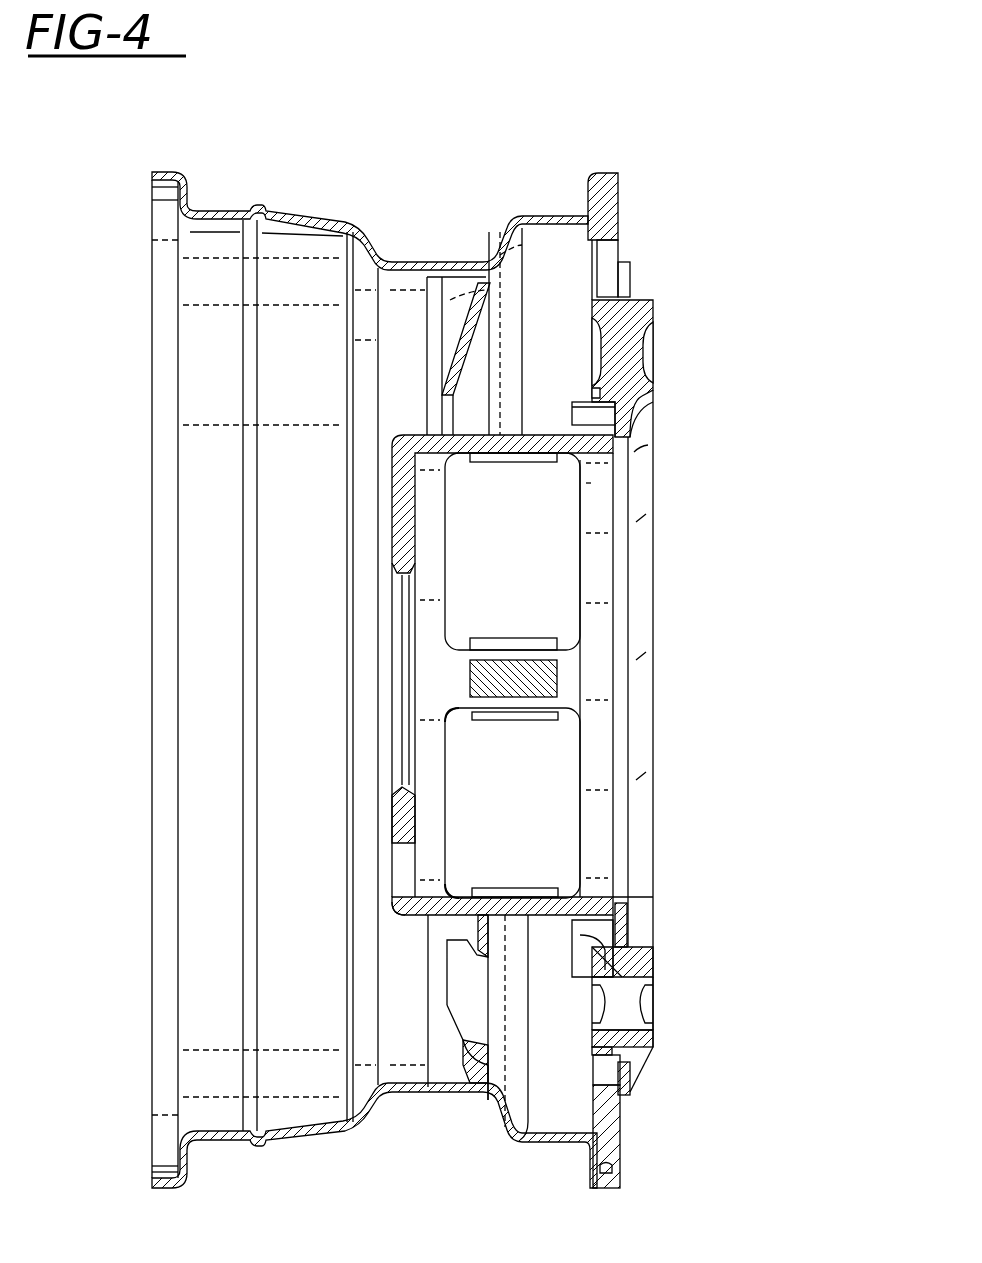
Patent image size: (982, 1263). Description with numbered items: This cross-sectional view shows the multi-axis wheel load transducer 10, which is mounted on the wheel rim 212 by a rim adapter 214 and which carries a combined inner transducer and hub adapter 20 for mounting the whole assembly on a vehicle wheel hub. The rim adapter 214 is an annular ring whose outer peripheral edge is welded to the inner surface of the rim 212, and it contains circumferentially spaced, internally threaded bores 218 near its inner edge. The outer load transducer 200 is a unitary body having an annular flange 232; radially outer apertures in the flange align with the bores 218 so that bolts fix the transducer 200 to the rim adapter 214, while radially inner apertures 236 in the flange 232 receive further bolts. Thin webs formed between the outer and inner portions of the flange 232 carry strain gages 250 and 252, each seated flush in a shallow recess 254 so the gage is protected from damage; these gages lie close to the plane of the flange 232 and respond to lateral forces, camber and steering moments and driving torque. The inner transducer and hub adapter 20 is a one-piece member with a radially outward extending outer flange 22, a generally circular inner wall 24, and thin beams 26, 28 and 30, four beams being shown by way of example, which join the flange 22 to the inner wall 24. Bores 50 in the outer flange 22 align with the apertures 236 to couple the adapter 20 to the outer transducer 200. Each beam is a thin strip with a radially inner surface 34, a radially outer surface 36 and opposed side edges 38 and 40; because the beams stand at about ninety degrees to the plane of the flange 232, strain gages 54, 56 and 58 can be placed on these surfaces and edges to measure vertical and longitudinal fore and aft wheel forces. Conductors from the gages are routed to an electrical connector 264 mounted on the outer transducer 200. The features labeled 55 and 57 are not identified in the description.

The multi-axis wheel load transducer 10 is at (705, 798).
The combined inner transducer and hub adapter 20 is at (493, 666).
The outer flange 22 is at (572, 402).
The inner wall 24 is at (398, 522).
The beam 26 is at (462, 455).
The beam 28 is at (466, 690).
The beam 30 is at (432, 956).
The radially inner surface 34 is at (455, 720).
The radially outer surface 36 is at (424, 918).
The side edge 38 is at (413, 768).
The side edge 40 is at (462, 640).
The bore 50 is at (568, 938).
The strain gage 54 is at (468, 678).
The upper race 55 is at (527, 460).
The strain gage 56 is at (506, 640).
The lower race of lower chamber 57 is at (507, 893).
The strain gage 58 is at (528, 722).
The load transducer 200 is at (672, 188).
The wheel rim 212 is at (424, 260).
The rim adapter 214 is at (619, 212).
The internally threaded bore 218 is at (600, 1072).
The annular flange 232 is at (630, 275).
The radially inner aperture 236 is at (624, 930).
The strain gage 250 is at (593, 1003).
The strain gage 252 is at (651, 1002).
The shallow recess 254 is at (654, 1025).
The electrical connector 264 is at (660, 306).